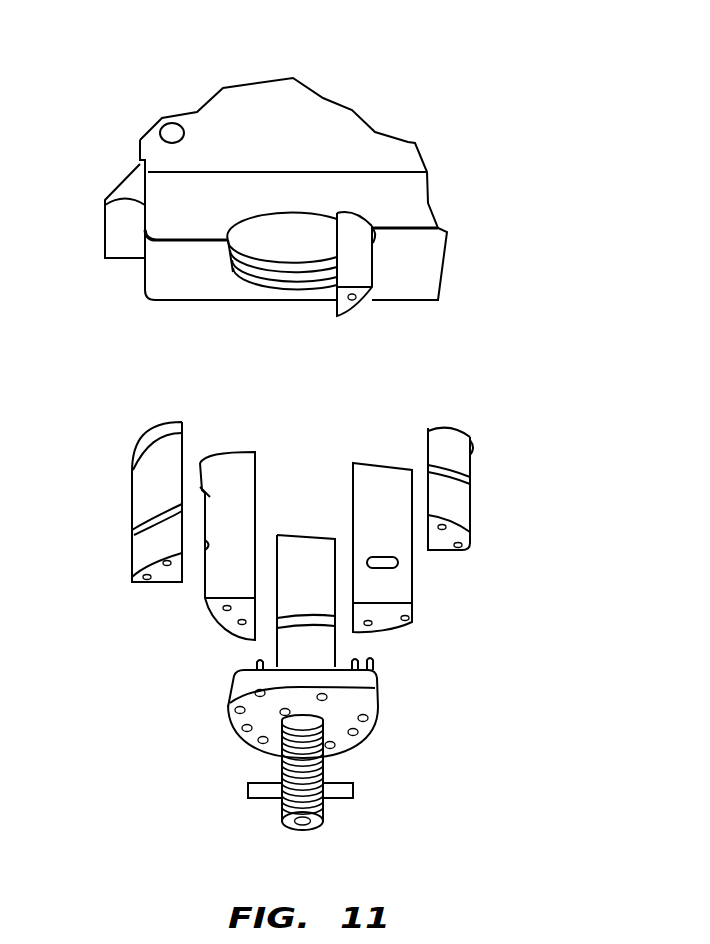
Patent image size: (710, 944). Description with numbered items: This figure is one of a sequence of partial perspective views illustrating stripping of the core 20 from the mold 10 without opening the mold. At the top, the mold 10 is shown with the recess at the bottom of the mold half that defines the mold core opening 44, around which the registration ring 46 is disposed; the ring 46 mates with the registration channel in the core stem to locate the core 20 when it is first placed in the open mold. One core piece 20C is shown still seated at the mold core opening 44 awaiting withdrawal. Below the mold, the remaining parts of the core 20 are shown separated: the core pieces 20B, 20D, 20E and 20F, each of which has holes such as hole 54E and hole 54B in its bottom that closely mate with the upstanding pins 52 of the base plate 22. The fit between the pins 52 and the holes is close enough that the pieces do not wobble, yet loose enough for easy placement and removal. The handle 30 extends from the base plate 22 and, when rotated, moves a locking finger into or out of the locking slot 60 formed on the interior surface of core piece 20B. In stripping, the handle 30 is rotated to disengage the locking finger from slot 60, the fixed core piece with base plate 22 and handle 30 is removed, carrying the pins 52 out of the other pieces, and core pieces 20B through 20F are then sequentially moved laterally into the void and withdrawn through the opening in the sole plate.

The mold 10 is at (228, 212).
The mold core opening 44 is at (302, 234).
The registration ring 46 is at (262, 268).
The core piece 20C is at (346, 305).
The core 20 is at (298, 638).
The core piece 20B is at (423, 528).
The core piece 20D is at (229, 621).
The core piece 20E is at (110, 524).
The core piece 20F is at (462, 458).
The hole 54E is at (140, 583).
The hole 54B is at (412, 620).
The locking slot 60 is at (398, 562).
The upstanding pins 52 is at (256, 666).
The base plate 22 is at (372, 688).
The handle 30 is at (322, 812).